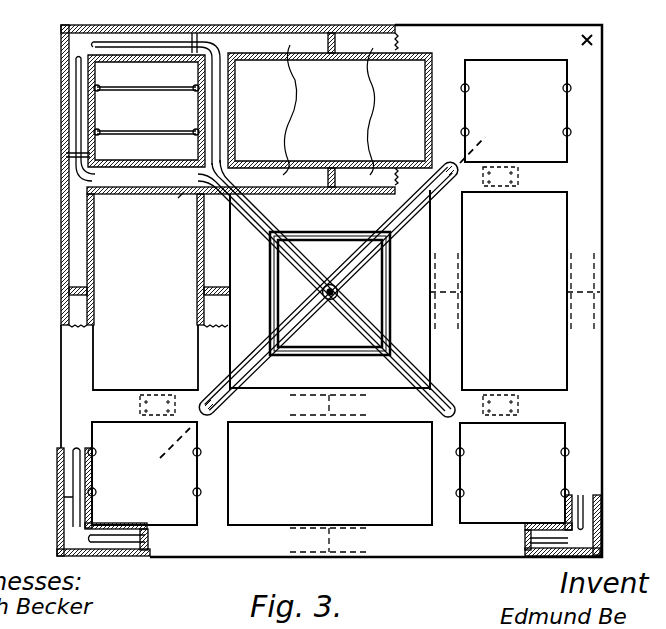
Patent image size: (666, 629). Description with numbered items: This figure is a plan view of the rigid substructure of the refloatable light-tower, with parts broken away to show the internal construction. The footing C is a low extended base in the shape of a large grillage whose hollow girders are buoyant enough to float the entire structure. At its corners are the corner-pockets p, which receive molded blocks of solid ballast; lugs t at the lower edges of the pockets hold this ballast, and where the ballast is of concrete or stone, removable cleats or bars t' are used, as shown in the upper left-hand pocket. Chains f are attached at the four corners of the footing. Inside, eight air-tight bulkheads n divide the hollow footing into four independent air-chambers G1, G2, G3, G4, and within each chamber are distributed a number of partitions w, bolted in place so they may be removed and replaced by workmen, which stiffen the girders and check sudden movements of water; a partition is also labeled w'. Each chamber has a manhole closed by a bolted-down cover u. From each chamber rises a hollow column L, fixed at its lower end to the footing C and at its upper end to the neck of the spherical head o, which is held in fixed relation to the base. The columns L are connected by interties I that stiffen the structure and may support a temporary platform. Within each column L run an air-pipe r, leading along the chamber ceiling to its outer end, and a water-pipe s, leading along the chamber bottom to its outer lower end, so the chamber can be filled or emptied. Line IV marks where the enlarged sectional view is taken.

The footing C is at (72, 392).
The corner-pockets p is at (327, 279).
The lugs t is at (329, 293).
The removable cleats or bars t' is at (146, 100).
The air-tight bulkheads n is at (333, 545).
The air-chamber G1 is at (215, 238).
The air-chamber G2 is at (383, 111).
The air-chamber G3 is at (575, 535).
The air-chamber G4 is at (72, 542).
The air-pipe r is at (545, 545).
The partitions w is at (126, 292).
The pipe w' is at (169, 202).
The water-pipe s is at (585, 508).
The chains f is at (598, 38).
The manhole cover u is at (525, 406).
The section line IV is at (322, 309).
The interties I is at (325, 353).
The hollow column L is at (414, 226).
The spherical head o is at (340, 292).